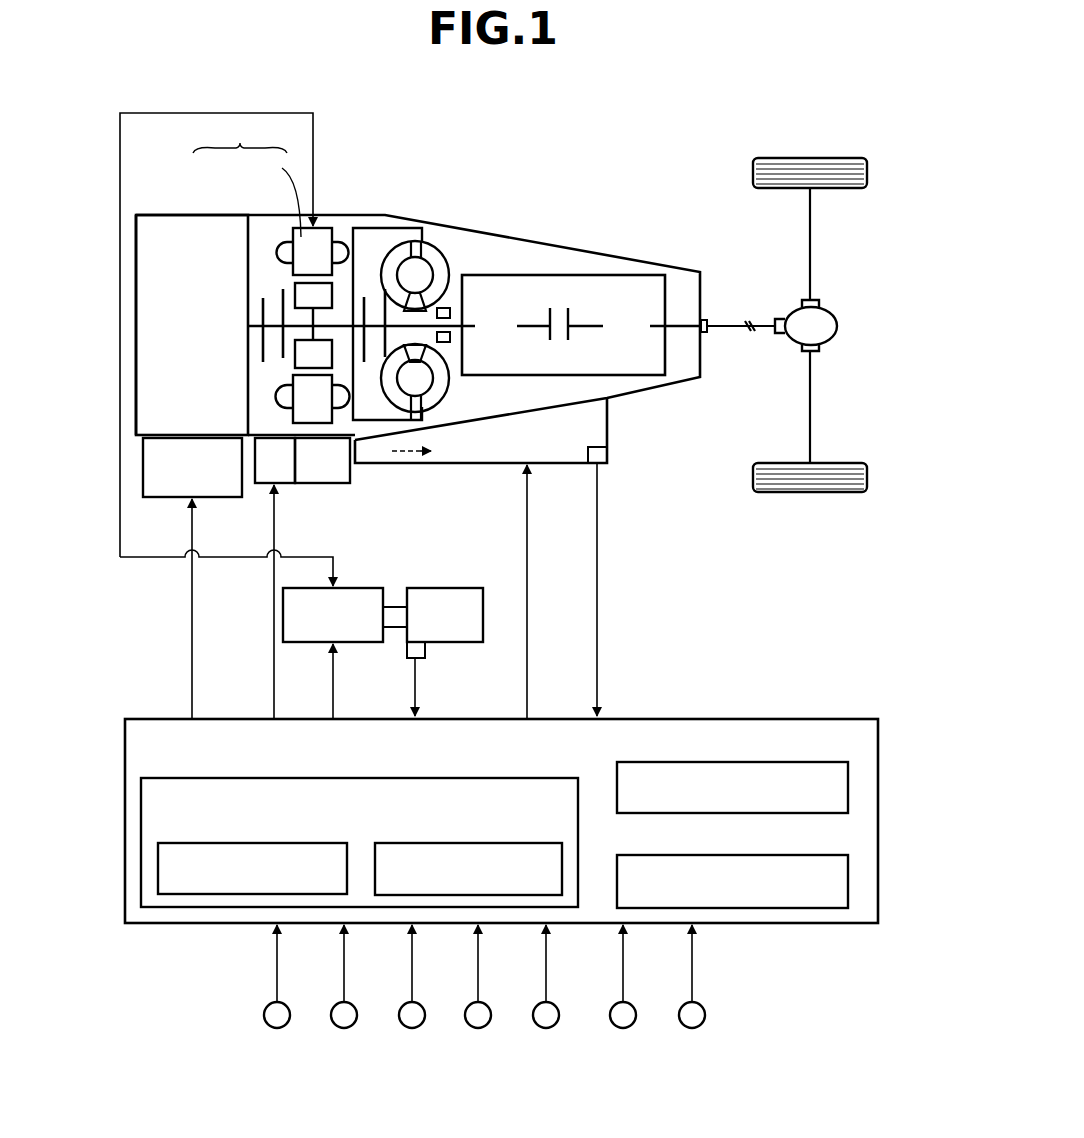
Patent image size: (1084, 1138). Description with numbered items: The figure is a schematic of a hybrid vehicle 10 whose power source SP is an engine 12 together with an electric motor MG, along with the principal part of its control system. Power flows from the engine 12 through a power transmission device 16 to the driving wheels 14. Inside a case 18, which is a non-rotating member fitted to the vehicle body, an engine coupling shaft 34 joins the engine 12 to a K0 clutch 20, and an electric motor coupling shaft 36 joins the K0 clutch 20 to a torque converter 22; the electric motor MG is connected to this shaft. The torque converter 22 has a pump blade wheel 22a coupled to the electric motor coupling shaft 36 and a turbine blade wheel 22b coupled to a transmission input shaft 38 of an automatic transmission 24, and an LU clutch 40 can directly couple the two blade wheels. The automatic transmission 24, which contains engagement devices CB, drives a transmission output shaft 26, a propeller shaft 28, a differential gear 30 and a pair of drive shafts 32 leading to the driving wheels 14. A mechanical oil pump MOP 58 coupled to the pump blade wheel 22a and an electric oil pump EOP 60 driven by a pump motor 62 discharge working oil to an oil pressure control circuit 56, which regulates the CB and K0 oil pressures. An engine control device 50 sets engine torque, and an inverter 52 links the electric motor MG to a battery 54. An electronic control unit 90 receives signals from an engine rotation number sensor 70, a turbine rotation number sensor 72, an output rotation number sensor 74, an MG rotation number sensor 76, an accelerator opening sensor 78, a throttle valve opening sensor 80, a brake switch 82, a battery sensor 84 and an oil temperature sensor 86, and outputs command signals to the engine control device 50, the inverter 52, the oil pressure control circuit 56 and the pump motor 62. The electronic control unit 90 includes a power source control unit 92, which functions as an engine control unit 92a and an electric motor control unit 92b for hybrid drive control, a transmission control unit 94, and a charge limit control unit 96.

The vehicle 10 is at (657, 118).
The engine 12 is at (168, 232).
The driving wheels 14 is at (758, 175).
The power transmission device 16 is at (457, 162).
The case 18 is at (351, 215).
The K0 clutch 20 is at (263, 343).
The torque converter 22 is at (453, 247).
The pump blade wheel 22a is at (437, 402).
The turbine blade wheel 22b is at (383, 392).
The automatic transmission 24 is at (628, 280).
The transmission output shaft 26 is at (658, 290).
The propeller shaft 28 is at (732, 332).
The differential gear 30 is at (820, 315).
The drive shafts 32 is at (811, 248).
The engine coupling shaft 34 is at (256, 300).
The electric motor coupling shaft 36 is at (293, 323).
The transmission input shaft 38 is at (468, 272).
The LU clutch 40 is at (363, 300).
The engine control device 50 is at (234, 498).
The inverter 52 is at (343, 598).
The battery 54 is at (441, 598).
The oil pressure control circuit 56 is at (601, 412).
The MOP 58 is at (446, 344).
The EOP 60 is at (334, 485).
The pump motor 62 is at (275, 485).
The engine rotation number sensor 70 is at (277, 1028).
The turbine rotation number sensor 72 is at (344, 1028).
The output rotation number sensor 74 is at (412, 1028).
The MG rotation number sensor 76 is at (478, 1028).
The accelerator opening sensor 78 is at (546, 1028).
The throttle valve opening sensor 80 is at (623, 1028).
The brake switch 82 is at (692, 1028).
The battery sensor 84 is at (426, 650).
The oil temperature sensor 86 is at (606, 455).
The electronic control unit 90 is at (806, 730).
The power source control unit 92 is at (534, 790).
The engine control unit 92a is at (304, 855).
The electric motor control unit 92b is at (500, 855).
The transmission control unit 94 is at (821, 778).
The charge limit control unit 96 is at (821, 871).